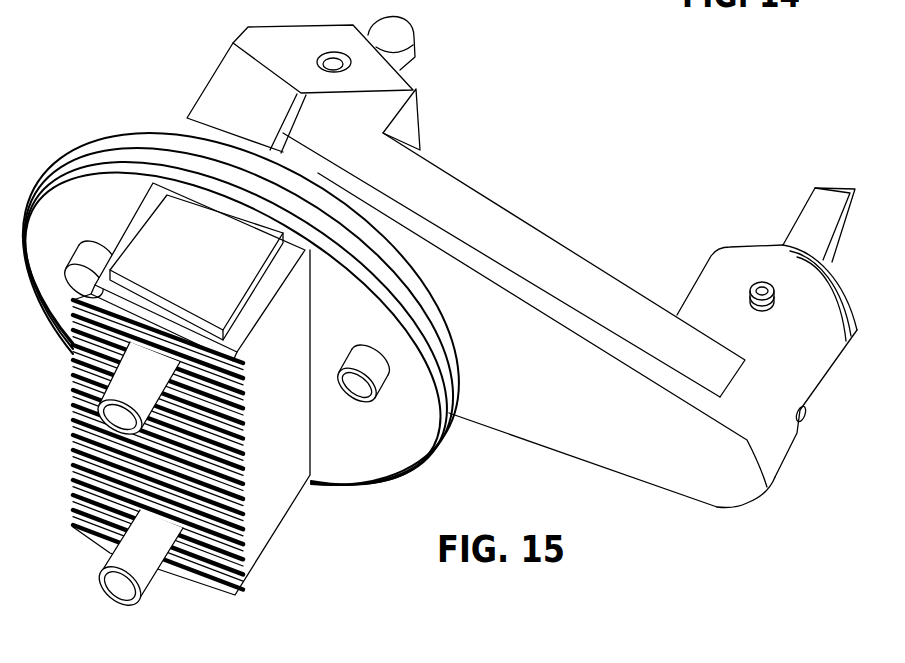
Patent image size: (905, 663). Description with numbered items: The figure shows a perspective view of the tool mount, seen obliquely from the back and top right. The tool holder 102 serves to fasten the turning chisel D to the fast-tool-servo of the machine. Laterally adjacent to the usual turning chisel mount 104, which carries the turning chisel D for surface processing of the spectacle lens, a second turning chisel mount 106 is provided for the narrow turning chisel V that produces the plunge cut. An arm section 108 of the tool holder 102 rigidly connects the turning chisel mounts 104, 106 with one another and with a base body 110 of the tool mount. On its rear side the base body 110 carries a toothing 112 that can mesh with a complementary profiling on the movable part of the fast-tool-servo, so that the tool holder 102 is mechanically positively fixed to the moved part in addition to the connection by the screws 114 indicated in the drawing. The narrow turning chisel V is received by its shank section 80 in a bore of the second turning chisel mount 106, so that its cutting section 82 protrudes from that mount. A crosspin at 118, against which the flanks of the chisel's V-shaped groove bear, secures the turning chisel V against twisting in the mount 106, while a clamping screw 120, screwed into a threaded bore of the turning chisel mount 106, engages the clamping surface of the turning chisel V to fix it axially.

The shank section 80 is at (823, 264).
The cutting section 82 is at (820, 204).
The tool holder 102 is at (122, 129).
The turning chisel mount 104 is at (399, 126).
The second turning chisel mount 106 is at (810, 380).
The arm section 108 is at (543, 401).
The base body 110 is at (360, 338).
The toothing 112 is at (236, 542).
The screws 114 is at (132, 387).
The crosspin 118 is at (803, 428).
The clamping screw 120 is at (777, 305).
The turning chisel D is at (412, 35).
The narrow turning chisel V is at (783, 226).